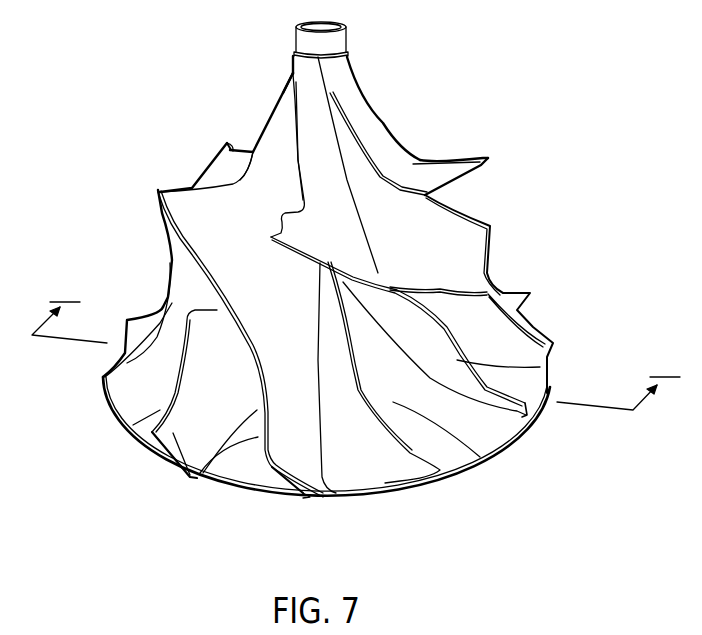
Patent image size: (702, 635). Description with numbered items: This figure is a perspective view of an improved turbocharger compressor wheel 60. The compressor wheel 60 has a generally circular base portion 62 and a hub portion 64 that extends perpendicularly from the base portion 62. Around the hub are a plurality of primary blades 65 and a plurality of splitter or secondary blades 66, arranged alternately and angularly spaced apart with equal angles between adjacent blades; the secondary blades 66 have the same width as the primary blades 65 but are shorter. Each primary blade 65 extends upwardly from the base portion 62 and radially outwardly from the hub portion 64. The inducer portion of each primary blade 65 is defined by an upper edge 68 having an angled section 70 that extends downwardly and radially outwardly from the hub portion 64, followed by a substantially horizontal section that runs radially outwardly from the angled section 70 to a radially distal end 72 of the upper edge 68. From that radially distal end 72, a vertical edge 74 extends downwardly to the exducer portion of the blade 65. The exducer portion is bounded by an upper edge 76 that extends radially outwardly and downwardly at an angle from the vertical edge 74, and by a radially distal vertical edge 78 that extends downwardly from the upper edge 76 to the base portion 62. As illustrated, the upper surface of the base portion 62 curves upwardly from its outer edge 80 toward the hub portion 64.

The compressor wheel 60 is at (456, 66).
The base portion 62 is at (357, 463).
The hub portion 64 is at (313, 95).
The primary blades 65 is at (244, 261).
The secondary blades 66 is at (148, 328).
The upper edge 68 is at (240, 172).
The angled section 70 is at (273, 107).
The radially distal end 72 is at (158, 190).
The vertical edge 74 is at (182, 262).
The upper edge 76 is at (237, 460).
The radially distal vertical edge 78 is at (285, 477).
The edge 80 is at (308, 497).